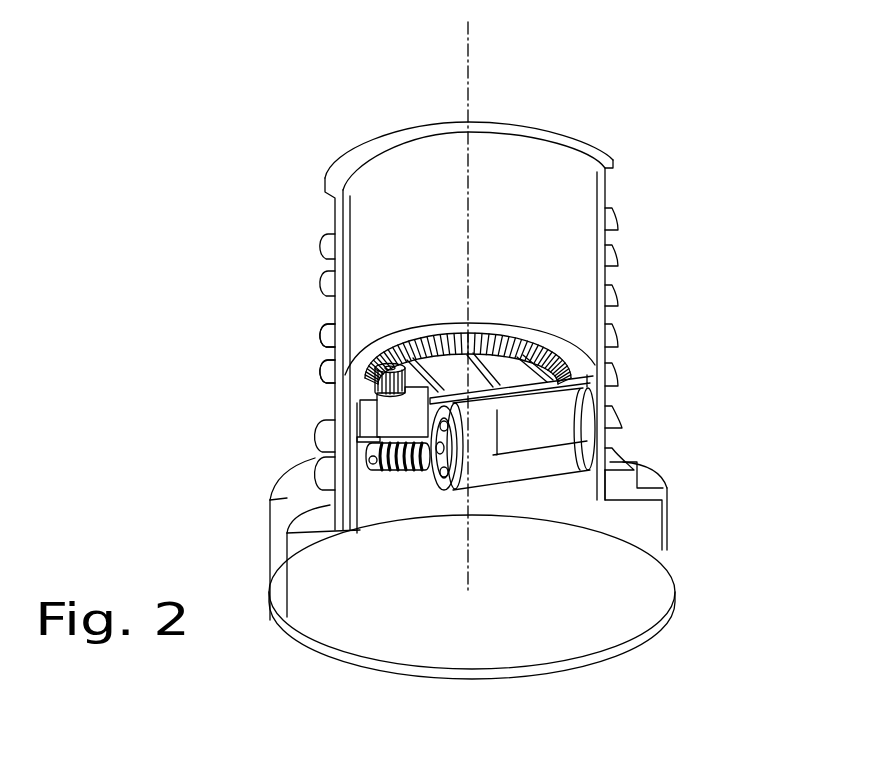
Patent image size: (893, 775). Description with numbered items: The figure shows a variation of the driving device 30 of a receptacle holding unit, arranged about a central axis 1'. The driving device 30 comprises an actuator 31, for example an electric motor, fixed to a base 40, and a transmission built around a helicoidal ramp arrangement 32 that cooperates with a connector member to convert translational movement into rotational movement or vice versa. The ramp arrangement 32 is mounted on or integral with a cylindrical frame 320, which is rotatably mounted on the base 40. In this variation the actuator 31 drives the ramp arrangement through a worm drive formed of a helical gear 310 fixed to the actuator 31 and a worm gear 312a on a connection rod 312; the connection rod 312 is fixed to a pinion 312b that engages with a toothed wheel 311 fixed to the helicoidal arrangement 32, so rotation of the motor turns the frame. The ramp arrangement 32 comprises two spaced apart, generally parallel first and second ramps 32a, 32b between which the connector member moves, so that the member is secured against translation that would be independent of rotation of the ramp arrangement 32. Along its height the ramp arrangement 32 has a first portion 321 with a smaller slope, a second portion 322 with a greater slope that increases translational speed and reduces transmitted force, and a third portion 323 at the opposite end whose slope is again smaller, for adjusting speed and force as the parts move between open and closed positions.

The axis 1' is at (504, 306).
The driving device 30 is at (697, 90).
The actuator 31 is at (492, 457).
The helicoidal ramp arrangement 32 is at (617, 418).
The first ramp 32a is at (320, 335).
The second ramp 32b is at (323, 375).
The base 40 is at (655, 598).
The helical gear 310 is at (415, 468).
The wheel 311 is at (488, 335).
The connection rod 312 is at (390, 422).
The worm gear 312a is at (360, 492).
The pinion 312b is at (388, 357).
The cylindrical frame 320 is at (605, 193).
The first portion 321 is at (290, 456).
The second portion 322 is at (647, 313).
The third portion 323 is at (292, 254).